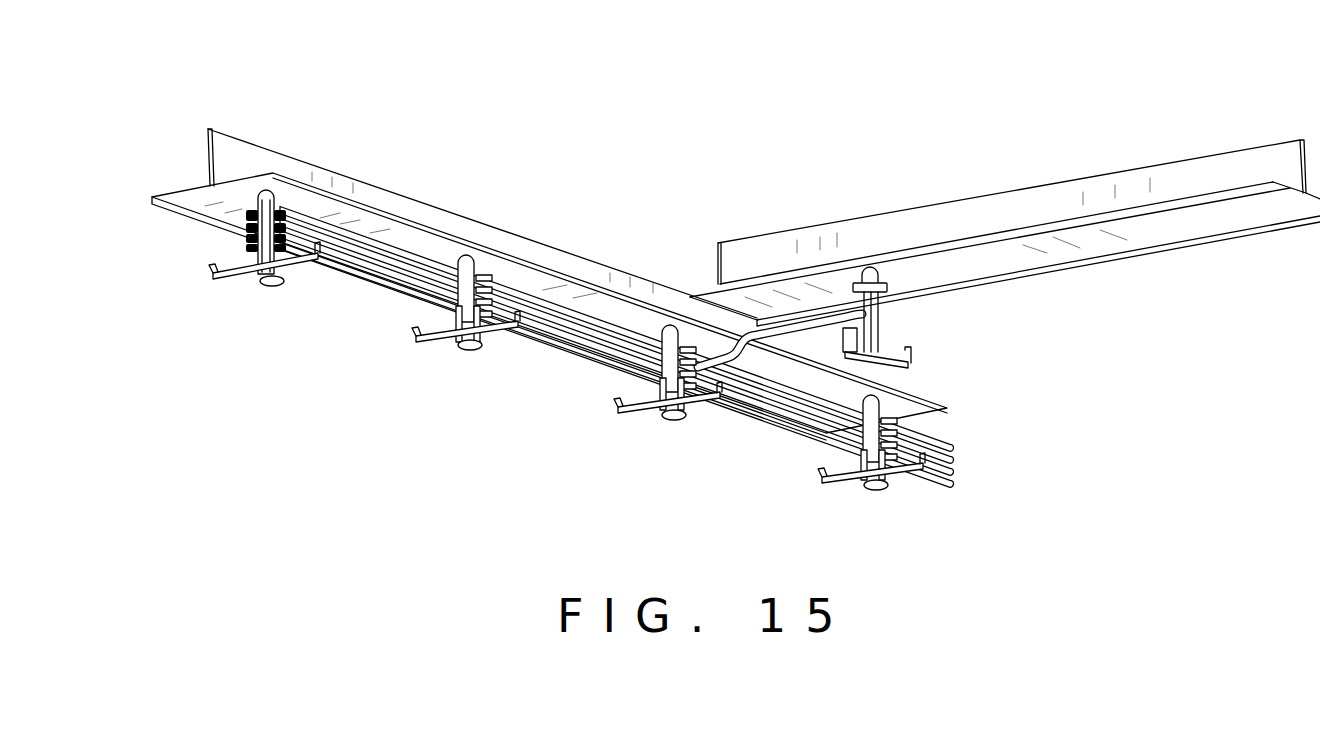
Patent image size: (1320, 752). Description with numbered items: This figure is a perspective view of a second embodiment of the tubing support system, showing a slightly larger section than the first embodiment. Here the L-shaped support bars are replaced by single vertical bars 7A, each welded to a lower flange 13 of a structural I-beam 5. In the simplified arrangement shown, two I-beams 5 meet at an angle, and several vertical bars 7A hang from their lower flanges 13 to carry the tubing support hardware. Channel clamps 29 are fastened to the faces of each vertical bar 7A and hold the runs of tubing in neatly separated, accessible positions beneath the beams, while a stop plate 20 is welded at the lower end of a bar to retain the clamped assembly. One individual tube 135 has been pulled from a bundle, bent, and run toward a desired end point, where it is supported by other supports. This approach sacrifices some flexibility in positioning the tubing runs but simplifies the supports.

The structural I-beam 5 is at (276, 118).
The single vertical bar 7A is at (477, 258).
The lower flange 13 is at (223, 205).
The stop plate 20 is at (467, 352).
The channel clamp 29 is at (264, 262).
The bent tube run 135 is at (805, 345).